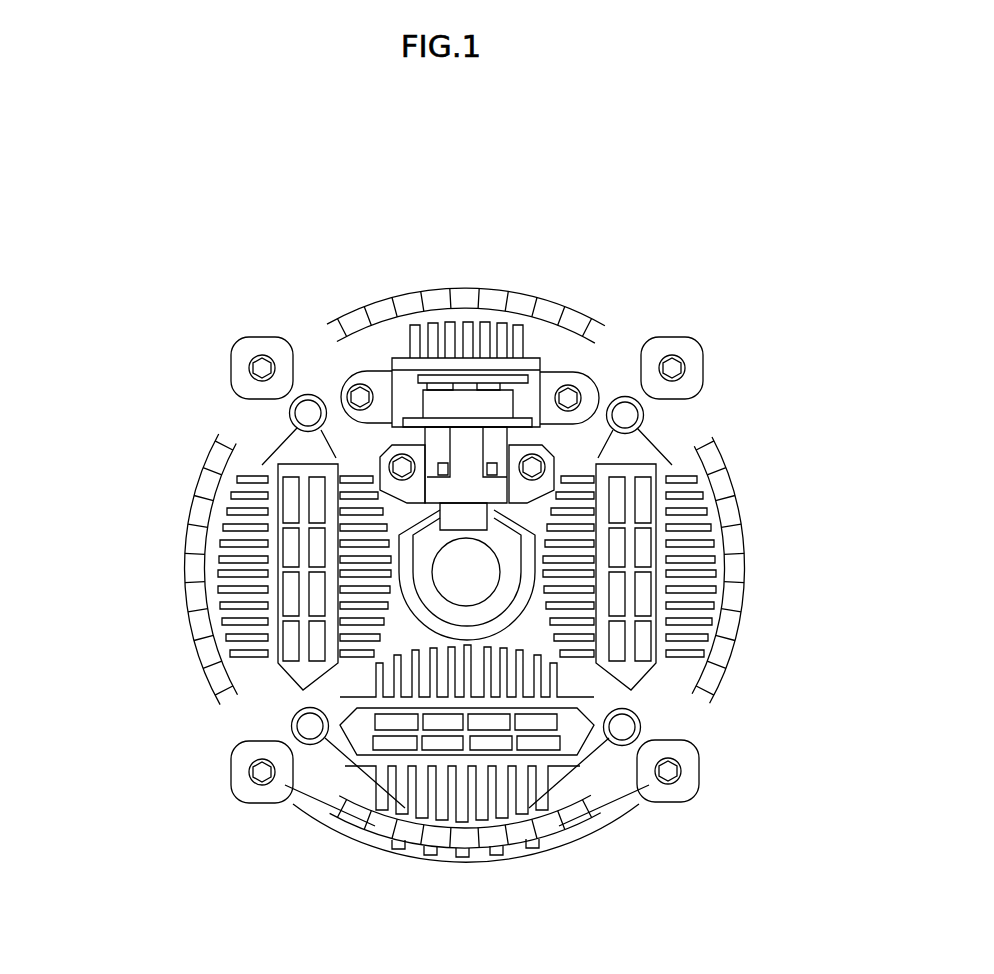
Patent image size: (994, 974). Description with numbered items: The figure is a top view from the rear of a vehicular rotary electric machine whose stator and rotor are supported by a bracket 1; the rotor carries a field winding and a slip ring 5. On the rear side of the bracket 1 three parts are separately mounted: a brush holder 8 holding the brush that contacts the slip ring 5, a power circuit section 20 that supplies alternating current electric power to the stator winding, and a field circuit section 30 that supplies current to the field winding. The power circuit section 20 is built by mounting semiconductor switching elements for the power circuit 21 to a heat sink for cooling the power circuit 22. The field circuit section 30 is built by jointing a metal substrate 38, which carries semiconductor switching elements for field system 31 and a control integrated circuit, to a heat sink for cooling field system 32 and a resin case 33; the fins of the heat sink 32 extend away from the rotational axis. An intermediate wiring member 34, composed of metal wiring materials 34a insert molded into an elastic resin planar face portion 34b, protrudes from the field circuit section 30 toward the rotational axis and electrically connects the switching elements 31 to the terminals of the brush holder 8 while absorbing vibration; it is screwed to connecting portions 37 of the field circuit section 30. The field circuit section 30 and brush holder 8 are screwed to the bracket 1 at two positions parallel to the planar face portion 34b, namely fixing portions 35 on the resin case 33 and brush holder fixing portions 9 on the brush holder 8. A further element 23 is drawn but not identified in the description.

The bracket 1 is at (273, 793).
The slip ring 5 is at (627, 730).
The brush holder 8 is at (467, 580).
The brush holder fixing portions 9 is at (473, 507).
The power circuit section 20 is at (463, 663).
The semiconductor switching elements for the power circuit 21 is at (290, 540).
The heat sink for cooling the power circuit 22 is at (335, 442).
The bolt 23 is at (107, 570).
The field circuit section 30 is at (481, 322).
The semiconductor switching elements for field system 31 is at (455, 378).
The heat sink for cooling field system 32 is at (398, 362).
The resin case 33 is at (376, 358).
The intermediate wiring member 34 is at (532, 362).
The metal wiring materials 34a is at (492, 433).
The planar face portion 34b is at (572, 393).
The fixing portions 35 is at (591, 353).
The connecting portions 37 is at (395, 387).
The metal substrate 38 is at (420, 370).